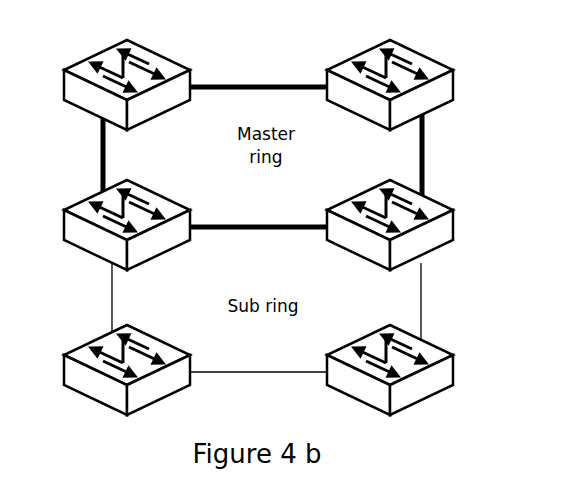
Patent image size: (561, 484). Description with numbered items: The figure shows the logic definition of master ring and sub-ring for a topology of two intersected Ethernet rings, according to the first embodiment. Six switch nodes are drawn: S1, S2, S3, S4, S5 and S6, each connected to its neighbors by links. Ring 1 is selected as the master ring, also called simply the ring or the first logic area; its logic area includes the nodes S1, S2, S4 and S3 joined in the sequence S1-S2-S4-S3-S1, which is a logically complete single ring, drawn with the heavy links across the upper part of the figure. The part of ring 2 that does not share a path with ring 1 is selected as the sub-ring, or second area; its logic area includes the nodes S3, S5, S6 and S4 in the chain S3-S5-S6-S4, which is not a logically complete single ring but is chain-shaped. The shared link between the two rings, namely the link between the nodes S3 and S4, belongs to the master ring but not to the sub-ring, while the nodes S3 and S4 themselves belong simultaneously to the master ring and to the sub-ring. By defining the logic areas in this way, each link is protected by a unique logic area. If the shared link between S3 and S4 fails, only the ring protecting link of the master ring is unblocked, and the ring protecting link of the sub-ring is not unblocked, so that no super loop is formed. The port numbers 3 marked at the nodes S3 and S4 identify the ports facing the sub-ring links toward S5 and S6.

The node S1 is at (127, 74).
The node S2 is at (390, 75).
The node S3 is at (127, 233).
The node S4 is at (390, 234).
The node S5 is at (127, 379).
The node S6 is at (390, 378).
The ring 1 is at (277, 194).
The ring 2 is at (273, 217).
The port 3 is at (266, 301).